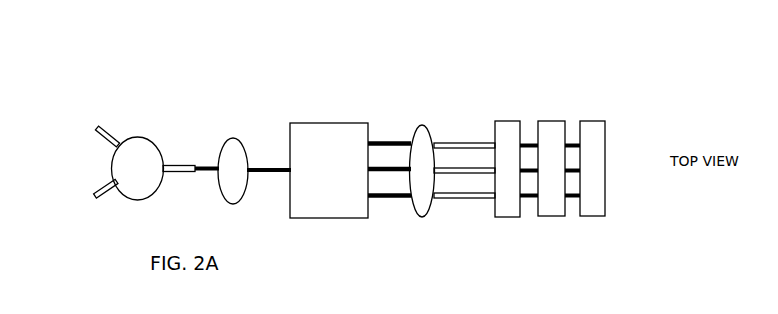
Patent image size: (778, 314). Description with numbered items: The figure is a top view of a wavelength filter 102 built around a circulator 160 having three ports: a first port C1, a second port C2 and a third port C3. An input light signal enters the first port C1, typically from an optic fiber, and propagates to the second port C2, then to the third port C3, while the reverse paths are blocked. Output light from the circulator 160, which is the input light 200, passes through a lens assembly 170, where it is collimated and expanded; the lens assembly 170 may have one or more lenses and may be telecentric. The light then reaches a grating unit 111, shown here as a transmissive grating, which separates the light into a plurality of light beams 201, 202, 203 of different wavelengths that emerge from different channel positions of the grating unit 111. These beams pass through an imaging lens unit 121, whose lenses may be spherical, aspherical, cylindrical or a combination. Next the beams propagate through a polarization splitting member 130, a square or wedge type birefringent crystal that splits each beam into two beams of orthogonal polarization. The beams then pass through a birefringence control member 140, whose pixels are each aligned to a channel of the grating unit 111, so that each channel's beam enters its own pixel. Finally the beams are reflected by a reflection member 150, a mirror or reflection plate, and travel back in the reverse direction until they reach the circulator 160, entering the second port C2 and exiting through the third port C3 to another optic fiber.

The wavelength filter 102 is at (113, 67).
The circulator 160 is at (145, 152).
The first port C1 is at (111, 131).
The second port C2 is at (179, 158).
The third port C3 is at (110, 201).
The input light 200 is at (208, 164).
The lens assembly 170 is at (233, 140).
The grating unit 111 is at (333, 130).
The imaging lens unit 121 is at (420, 137).
The light beam 201 is at (452, 199).
The light beam 202 is at (465, 174).
The light beam 203 is at (473, 149).
The polarization splitting member 130 is at (507, 130).
The birefringence control member 140 is at (555, 130).
The reflection member 150 is at (590, 130).